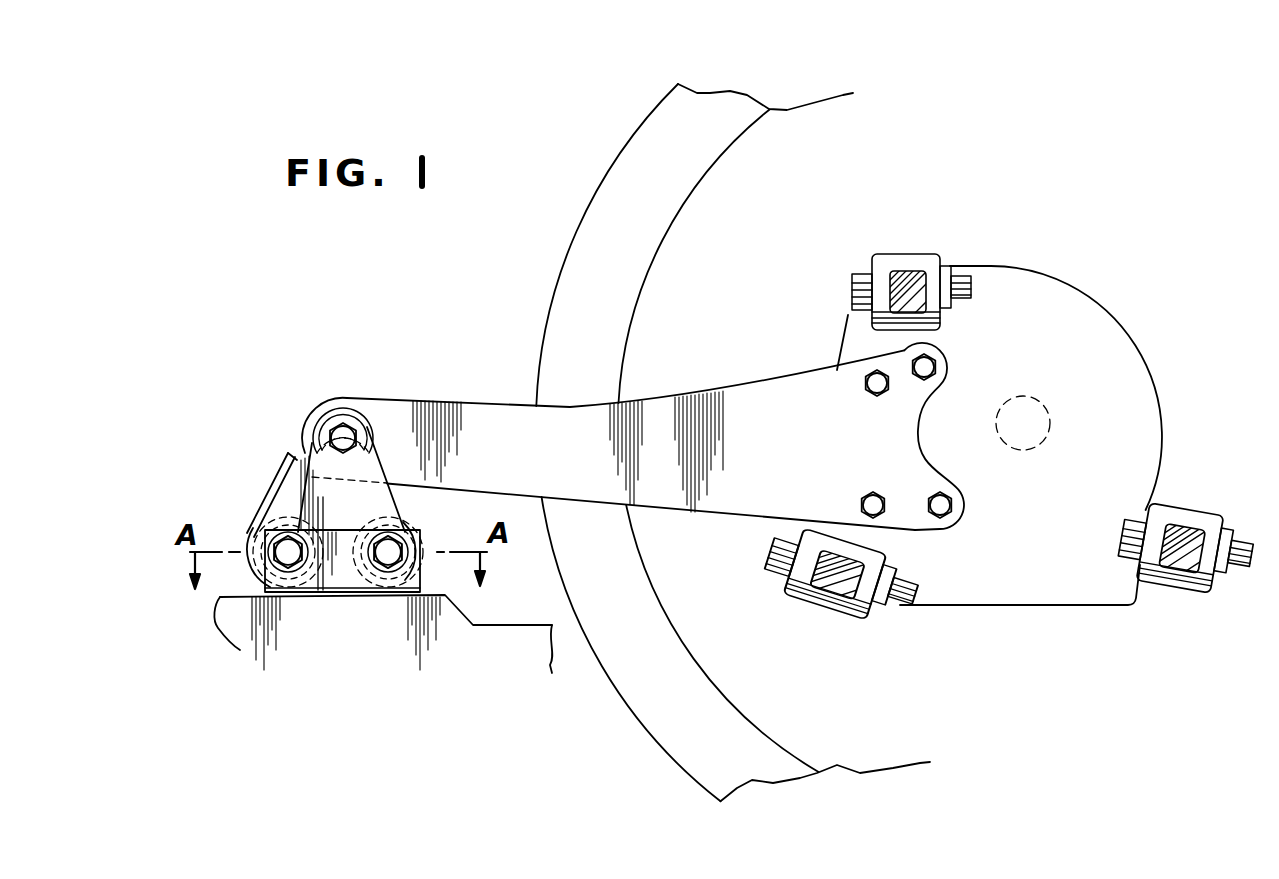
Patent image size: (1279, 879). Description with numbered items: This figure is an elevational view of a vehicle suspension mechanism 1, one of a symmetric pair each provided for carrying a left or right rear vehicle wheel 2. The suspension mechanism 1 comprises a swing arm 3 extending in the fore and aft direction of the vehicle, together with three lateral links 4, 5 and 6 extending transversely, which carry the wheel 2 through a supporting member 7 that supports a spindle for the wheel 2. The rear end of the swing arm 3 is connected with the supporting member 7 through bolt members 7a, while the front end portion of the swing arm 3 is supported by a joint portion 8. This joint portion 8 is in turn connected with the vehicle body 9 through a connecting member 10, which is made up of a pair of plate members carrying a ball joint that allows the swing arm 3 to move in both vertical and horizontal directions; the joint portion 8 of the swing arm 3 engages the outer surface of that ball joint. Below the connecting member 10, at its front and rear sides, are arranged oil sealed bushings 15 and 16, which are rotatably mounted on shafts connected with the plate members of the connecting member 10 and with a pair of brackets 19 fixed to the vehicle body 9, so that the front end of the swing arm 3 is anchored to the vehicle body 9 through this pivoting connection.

The suspension mechanism 1 is at (506, 397).
The rear vehicle wheel 2 is at (573, 243).
The swing arm 3 is at (723, 397).
The lateral link 4 is at (913, 262).
The lateral link 5 is at (830, 614).
The lateral link 6 is at (1208, 520).
The supporting member 7 is at (1140, 345).
The bolt members 7a is at (930, 368).
The joint portion 8 is at (352, 402).
The vehicle body 9 is at (462, 613).
The connecting member 10 is at (266, 472).
The oil sealed bushing 15 is at (255, 553).
The oil sealed bushing 16 is at (405, 522).
The bracket 19 is at (338, 586).